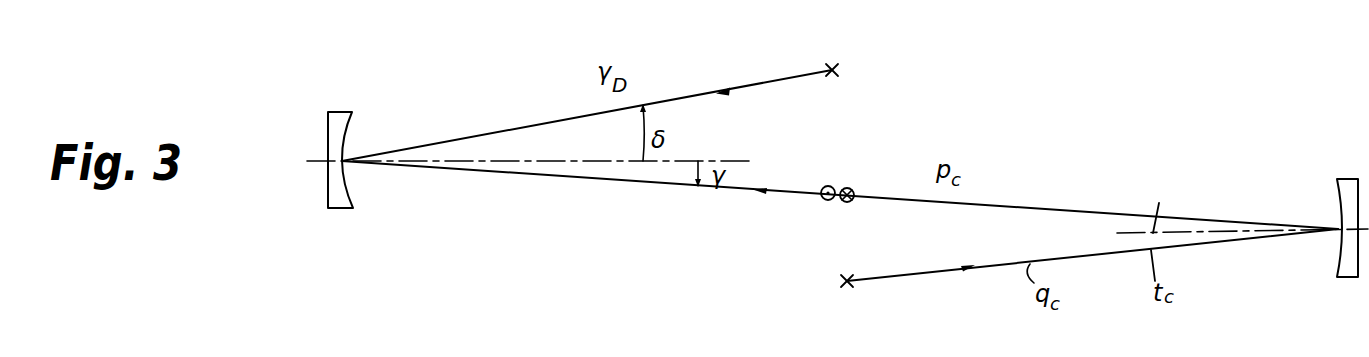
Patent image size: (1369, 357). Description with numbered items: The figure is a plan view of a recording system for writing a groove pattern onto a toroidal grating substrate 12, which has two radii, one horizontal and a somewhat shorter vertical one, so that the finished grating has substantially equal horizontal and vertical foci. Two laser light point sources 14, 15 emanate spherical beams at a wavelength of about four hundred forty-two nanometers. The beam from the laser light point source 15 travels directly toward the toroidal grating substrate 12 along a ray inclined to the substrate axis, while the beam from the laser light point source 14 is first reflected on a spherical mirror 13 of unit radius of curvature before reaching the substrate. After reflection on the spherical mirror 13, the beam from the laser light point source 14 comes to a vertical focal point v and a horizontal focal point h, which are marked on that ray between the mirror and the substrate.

The toroidal grating substrate 12 is at (343, 112).
The spherical mirror 13 is at (1338, 180).
The laser light point source 14 is at (845, 286).
The laser light point source 15 is at (836, 68).
The vertical focal point v is at (830, 186).
The horizontal focal point h is at (853, 188).